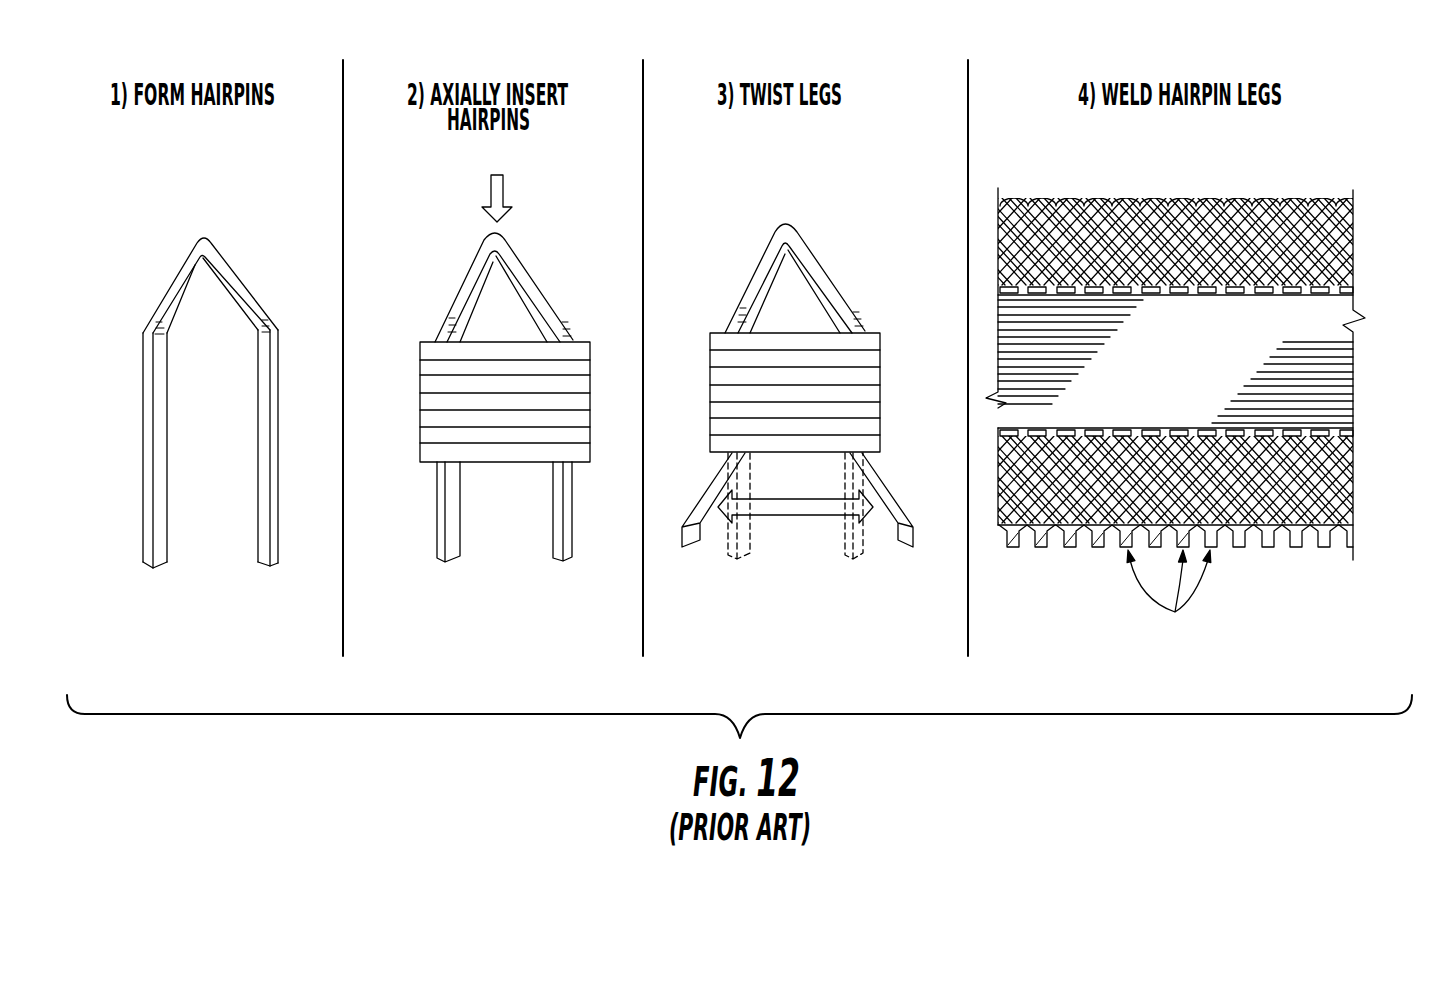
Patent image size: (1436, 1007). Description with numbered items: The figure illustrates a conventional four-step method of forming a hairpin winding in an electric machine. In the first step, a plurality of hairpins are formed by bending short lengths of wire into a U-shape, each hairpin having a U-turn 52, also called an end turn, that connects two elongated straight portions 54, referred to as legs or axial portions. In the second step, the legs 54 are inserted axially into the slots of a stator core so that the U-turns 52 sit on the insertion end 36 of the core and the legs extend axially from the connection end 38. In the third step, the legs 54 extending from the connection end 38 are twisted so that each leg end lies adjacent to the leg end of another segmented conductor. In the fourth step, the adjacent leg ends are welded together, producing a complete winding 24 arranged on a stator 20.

The stator 20 is at (1177, 386).
The winding 24 is at (1366, 529).
The insertion end 36 is at (1357, 290).
The connection end 38 is at (1357, 432).
The U-turn 52 is at (247, 280).
The elongated straight portion 54 is at (142, 430).